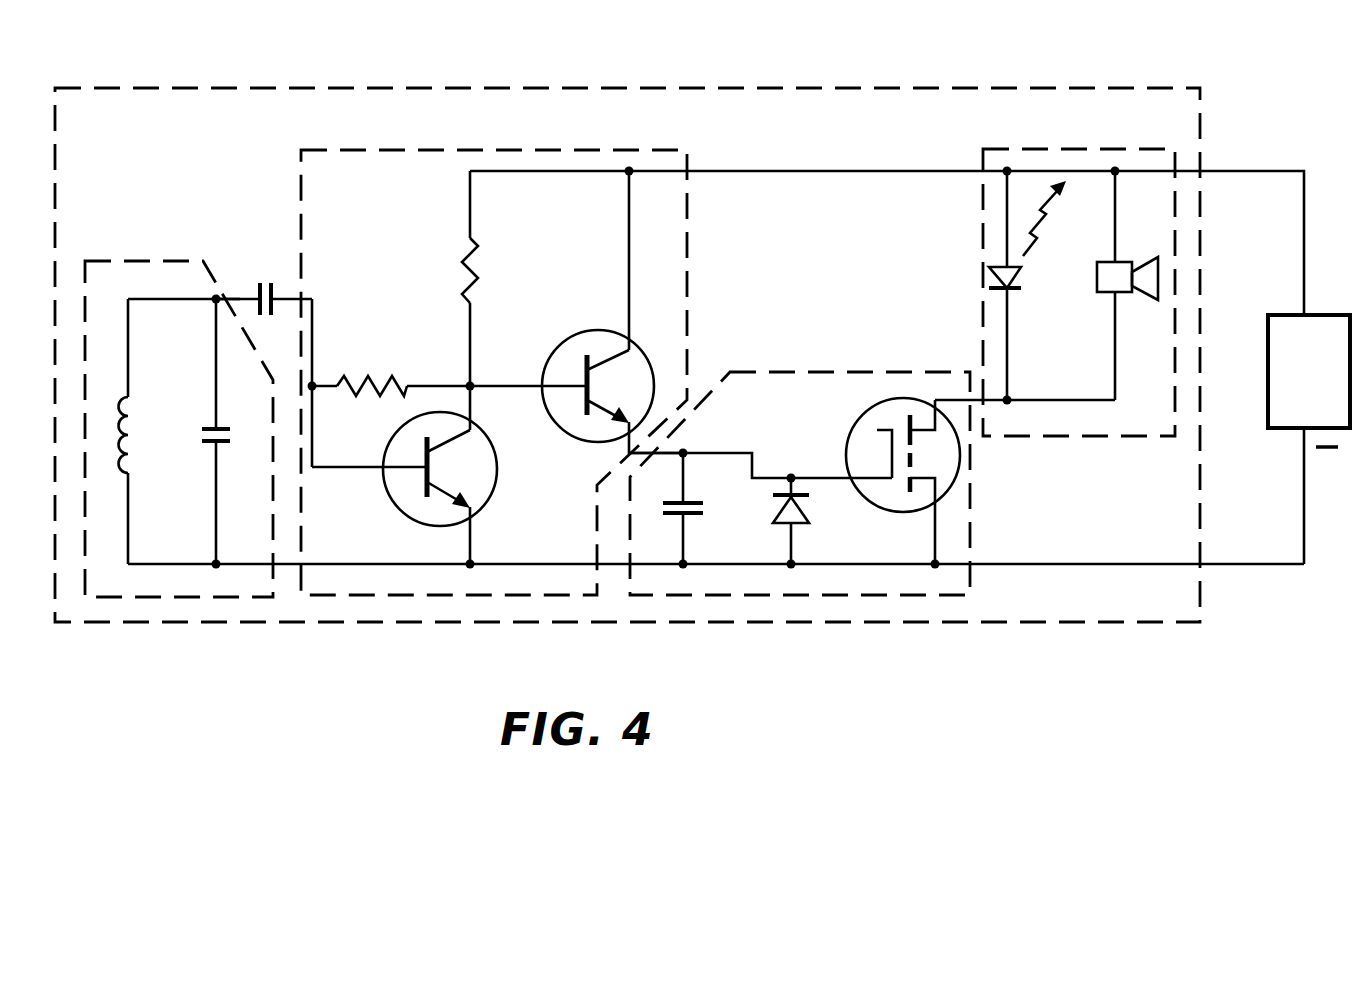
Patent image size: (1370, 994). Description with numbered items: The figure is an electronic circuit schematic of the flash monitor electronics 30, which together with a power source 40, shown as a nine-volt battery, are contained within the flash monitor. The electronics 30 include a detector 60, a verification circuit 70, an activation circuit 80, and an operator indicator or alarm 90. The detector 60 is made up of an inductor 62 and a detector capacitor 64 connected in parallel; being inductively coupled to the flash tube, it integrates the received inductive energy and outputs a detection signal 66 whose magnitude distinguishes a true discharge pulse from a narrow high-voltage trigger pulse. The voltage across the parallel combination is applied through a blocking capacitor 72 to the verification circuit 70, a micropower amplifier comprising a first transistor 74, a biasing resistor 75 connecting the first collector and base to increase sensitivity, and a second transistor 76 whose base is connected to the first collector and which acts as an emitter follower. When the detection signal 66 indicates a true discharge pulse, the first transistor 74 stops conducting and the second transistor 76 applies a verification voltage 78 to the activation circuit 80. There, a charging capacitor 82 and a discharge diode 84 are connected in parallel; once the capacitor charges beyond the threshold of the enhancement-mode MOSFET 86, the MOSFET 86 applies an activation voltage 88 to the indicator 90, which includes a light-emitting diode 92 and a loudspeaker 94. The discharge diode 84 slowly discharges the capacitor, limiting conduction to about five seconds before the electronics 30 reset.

The flash monitor electronics 30 is at (683, 88).
The power source 40 is at (1268, 316).
The detector 60 is at (128, 261).
The inductor 62 is at (131, 458).
The detector capacitor 64 is at (232, 446).
The detection signal 66 is at (232, 298).
The verification circuit 70 is at (437, 150).
The blocking capacitor 72 is at (266, 281).
The first transistor 74 is at (496, 500).
The biasing resistor 75 is at (383, 380).
The second transistor 76 is at (544, 368).
The verification voltage 78 is at (650, 447).
The activation circuit 80 is at (825, 372).
The charging capacitor 82 is at (704, 510).
The discharge diode 84 is at (809, 516).
The enhancement-mode MOSFET 86 is at (880, 510).
The activation voltage 88 is at (975, 400).
The indicator 90 is at (1095, 149).
The light-emitting diode 92 is at (1021, 280).
The loudspeaker 94 is at (1129, 294).